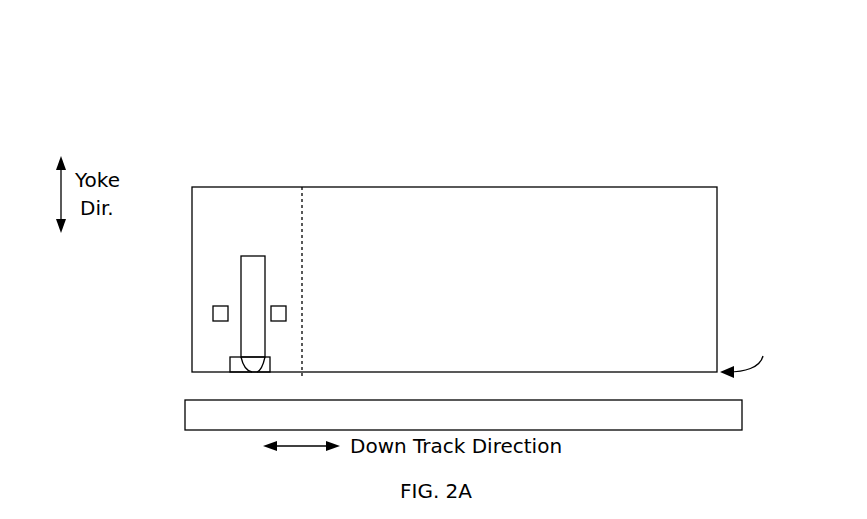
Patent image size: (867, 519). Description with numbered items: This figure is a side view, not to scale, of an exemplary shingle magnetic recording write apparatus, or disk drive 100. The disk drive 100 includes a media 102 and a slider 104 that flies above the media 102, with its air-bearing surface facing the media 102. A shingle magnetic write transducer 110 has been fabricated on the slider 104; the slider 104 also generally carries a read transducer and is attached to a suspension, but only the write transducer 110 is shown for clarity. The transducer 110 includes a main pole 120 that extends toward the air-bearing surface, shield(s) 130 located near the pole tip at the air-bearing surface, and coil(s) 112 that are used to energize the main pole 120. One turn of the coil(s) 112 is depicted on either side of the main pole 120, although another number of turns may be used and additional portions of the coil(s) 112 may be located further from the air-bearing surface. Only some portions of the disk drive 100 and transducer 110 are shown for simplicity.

The disk drive 100 is at (458, 105).
The media 102 is at (185, 418).
The slider 104 is at (718, 249).
The shingle magnetic write transducer 110 is at (322, 258).
The coil 112 is at (278, 305).
The main pole 120 is at (253, 255).
The shield 130 is at (240, 372).